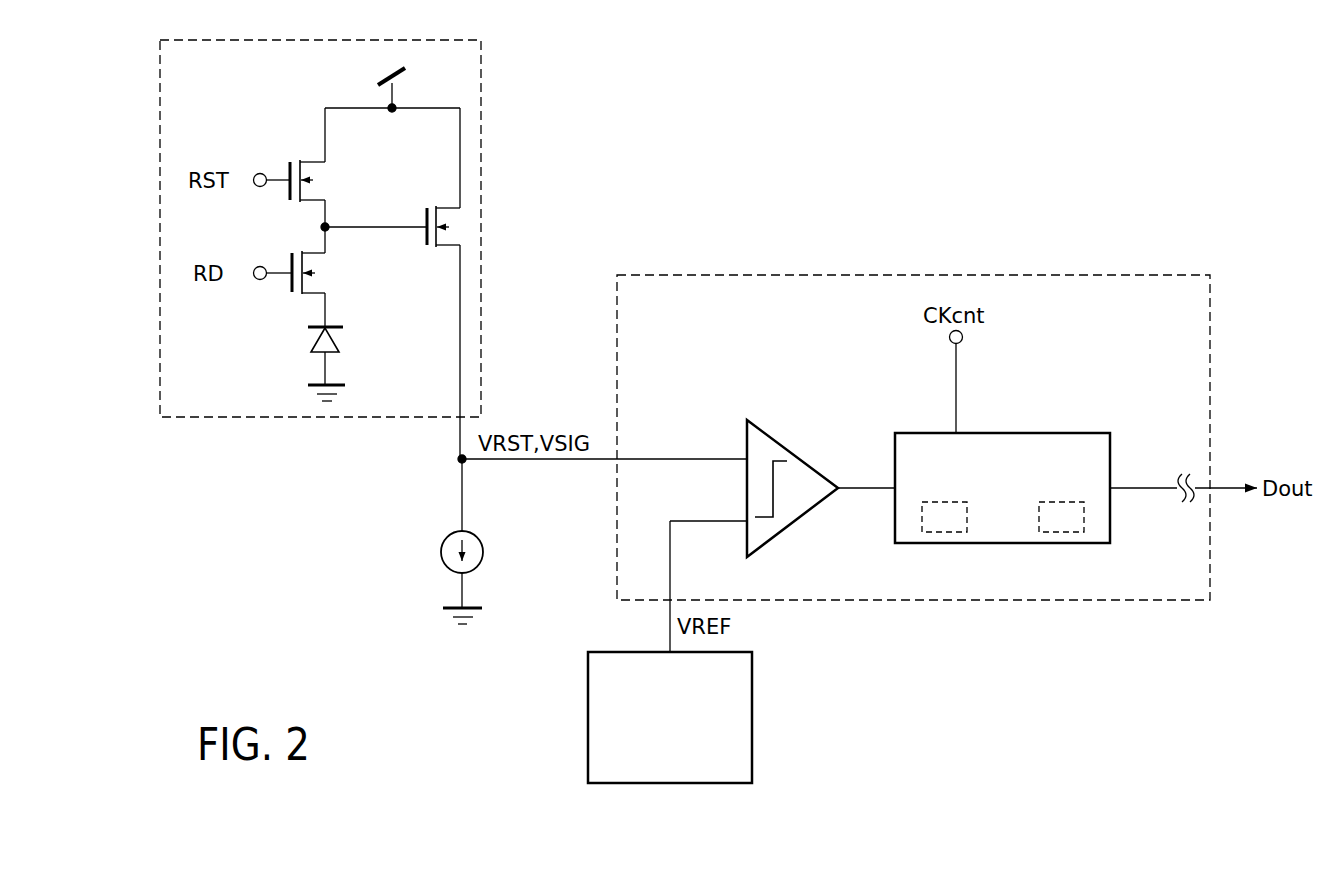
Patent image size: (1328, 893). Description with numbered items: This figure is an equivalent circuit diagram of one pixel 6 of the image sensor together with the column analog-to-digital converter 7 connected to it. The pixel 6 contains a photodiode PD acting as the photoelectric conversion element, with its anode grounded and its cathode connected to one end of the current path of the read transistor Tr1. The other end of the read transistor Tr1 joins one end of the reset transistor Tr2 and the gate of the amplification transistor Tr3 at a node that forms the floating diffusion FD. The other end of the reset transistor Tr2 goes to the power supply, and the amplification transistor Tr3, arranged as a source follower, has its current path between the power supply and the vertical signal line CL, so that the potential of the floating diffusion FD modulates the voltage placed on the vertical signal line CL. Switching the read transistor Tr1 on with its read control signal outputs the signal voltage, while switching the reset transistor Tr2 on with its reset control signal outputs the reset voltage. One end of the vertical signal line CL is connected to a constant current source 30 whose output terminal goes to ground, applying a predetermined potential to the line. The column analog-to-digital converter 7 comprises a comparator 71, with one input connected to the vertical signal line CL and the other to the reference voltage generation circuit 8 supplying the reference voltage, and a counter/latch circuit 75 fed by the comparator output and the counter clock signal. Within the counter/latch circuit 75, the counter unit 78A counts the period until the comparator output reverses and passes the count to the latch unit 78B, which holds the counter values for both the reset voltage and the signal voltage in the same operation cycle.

The pixel 6 is at (482, 115).
The column analog-to-digital converter 7 is at (879, 275).
The reference voltage generation circuit 8 is at (752, 718).
The constant current source 30 is at (436, 537).
The comparator 71 is at (778, 442).
The counter/latch circuit 75 is at (1088, 432).
The counter unit 78A is at (938, 533).
The latch unit 78B is at (1065, 533).
The read transistor Tr1 is at (293, 306).
The reset transistor Tr2 is at (291, 149).
The amplification transistor Tr3 is at (424, 262).
The photodiode PD is at (357, 354).
The floating diffusion FD is at (321, 227).
The vertical signal line CL is at (542, 461).